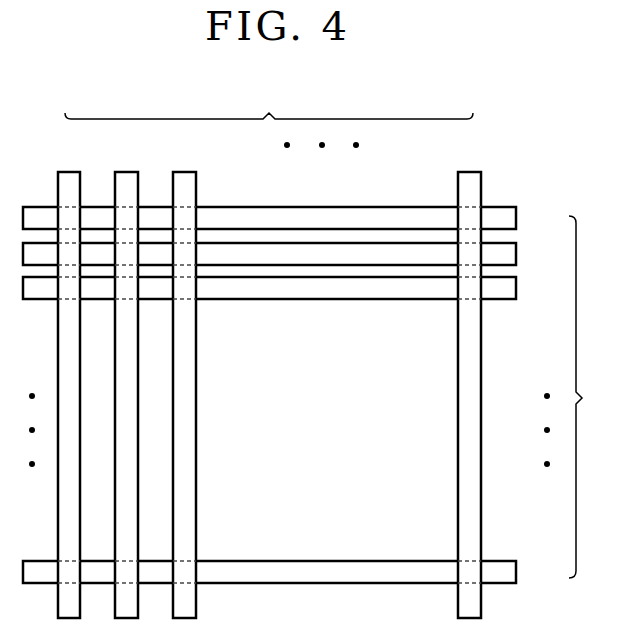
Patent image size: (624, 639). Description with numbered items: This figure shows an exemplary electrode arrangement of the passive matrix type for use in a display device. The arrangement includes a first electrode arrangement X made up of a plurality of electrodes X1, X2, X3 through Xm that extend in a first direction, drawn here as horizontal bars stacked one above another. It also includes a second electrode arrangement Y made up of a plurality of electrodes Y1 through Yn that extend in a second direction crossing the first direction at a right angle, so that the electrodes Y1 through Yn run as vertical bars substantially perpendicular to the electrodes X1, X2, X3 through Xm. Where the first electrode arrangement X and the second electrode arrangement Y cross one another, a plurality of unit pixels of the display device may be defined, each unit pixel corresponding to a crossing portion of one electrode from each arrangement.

The electrode X1 is at (292, 219).
The electrode X2 is at (292, 255).
The electrode X3 is at (292, 289).
The electrode Xm is at (295, 571).
The electrode Y1 is at (128, 375).
The electrode Yn is at (469, 375).
The first electrode arrangement X is at (587, 397).
The second electrode arrangement Y is at (269, 101).